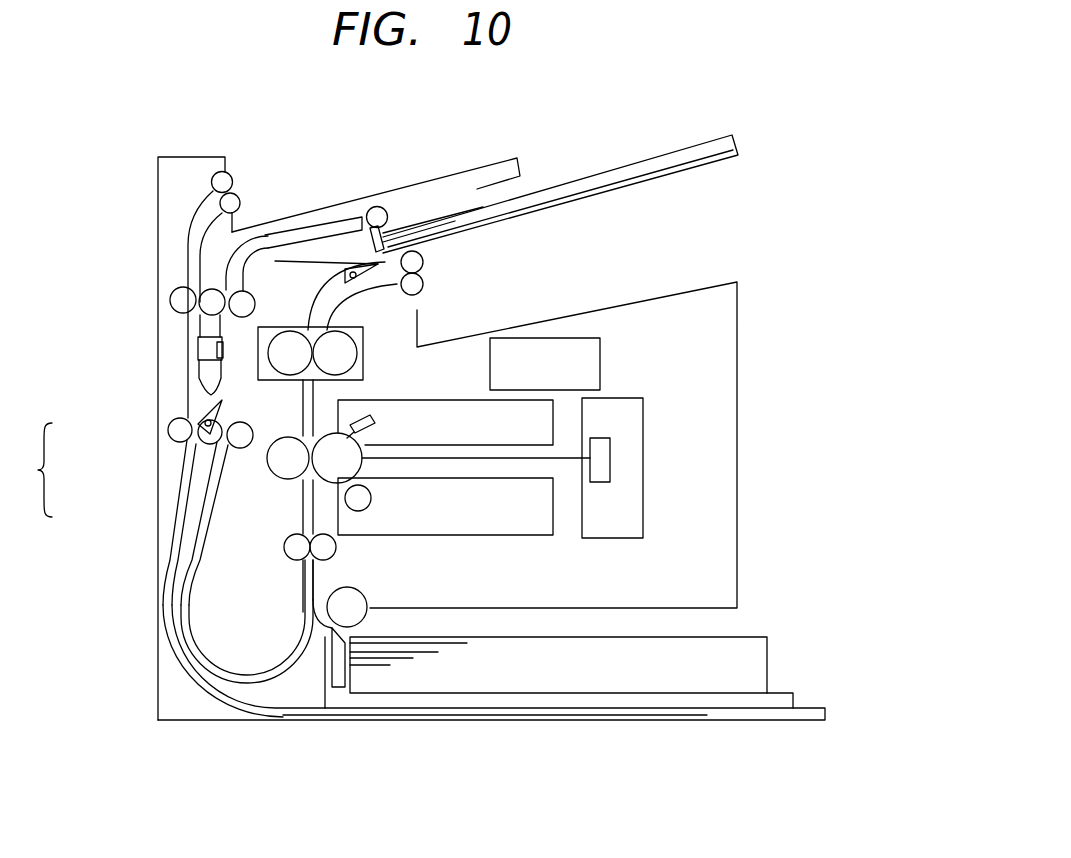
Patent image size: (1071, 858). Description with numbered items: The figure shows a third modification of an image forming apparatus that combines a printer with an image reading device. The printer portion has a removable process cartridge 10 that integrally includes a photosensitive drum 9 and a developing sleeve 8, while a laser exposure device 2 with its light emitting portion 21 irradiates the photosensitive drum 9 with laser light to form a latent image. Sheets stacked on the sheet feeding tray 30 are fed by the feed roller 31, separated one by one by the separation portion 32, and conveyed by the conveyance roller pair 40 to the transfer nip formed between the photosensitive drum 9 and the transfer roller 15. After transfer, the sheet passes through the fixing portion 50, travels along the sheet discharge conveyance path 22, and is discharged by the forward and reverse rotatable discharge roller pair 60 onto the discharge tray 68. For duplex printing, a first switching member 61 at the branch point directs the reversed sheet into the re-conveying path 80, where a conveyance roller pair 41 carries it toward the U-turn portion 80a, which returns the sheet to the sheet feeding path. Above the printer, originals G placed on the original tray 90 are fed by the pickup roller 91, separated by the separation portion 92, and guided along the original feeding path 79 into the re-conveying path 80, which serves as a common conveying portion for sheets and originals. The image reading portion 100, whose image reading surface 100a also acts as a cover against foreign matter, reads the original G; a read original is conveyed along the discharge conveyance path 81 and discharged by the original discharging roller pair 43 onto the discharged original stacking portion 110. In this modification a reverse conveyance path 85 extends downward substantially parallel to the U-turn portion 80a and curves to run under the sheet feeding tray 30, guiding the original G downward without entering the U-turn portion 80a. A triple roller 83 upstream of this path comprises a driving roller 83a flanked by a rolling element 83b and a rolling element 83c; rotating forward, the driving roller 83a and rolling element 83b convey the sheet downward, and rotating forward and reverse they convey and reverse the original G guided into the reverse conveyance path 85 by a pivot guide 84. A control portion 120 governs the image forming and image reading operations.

The laser exposure device 2 is at (645, 412).
The developing sleeve 8 is at (372, 499).
The photosensitive drum 9 is at (378, 418).
The process cartridge 10 is at (515, 537).
The transfer roller 15 is at (278, 474).
The light emitting portion 21 is at (612, 460).
The sheet discharge conveyance path 22 is at (315, 302).
The sheet feeding tray 30 is at (790, 690).
The feed roller 31 is at (364, 600).
The separation portion 32 is at (340, 695).
The conveyance roller pair 40 is at (334, 550).
The conveyance roller pair 41 is at (205, 275).
The original discharging roller pair 43 is at (228, 172).
The fixing portion 50 is at (360, 372).
The discharge roller pair 60 is at (423, 262).
The first switching member 61 is at (365, 283).
The discharge tray 68 is at (572, 322).
The original feeding path 79 is at (310, 228).
The re-conveying path 80 is at (275, 237).
The U-turn portion 80a is at (190, 628).
The discharge conveyance path 81 is at (188, 320).
The triple roller 83 is at (130, 467).
The driving roller 83a is at (211, 445).
The rolling element 83b is at (238, 449).
The rolling element 83c is at (176, 432).
The pivot guide 84 is at (200, 403).
The reverse conveyance path 85 is at (183, 672).
The original tray 90 is at (606, 188).
The pickup roller 91 is at (387, 213).
The separation portion 92 is at (360, 226).
The image reading portion 100 is at (197, 345).
The image reading surface 100a is at (193, 362).
The discharged original stacking portion 110 is at (480, 158).
The control portion 120 is at (603, 357).
The original G is at (690, 148).